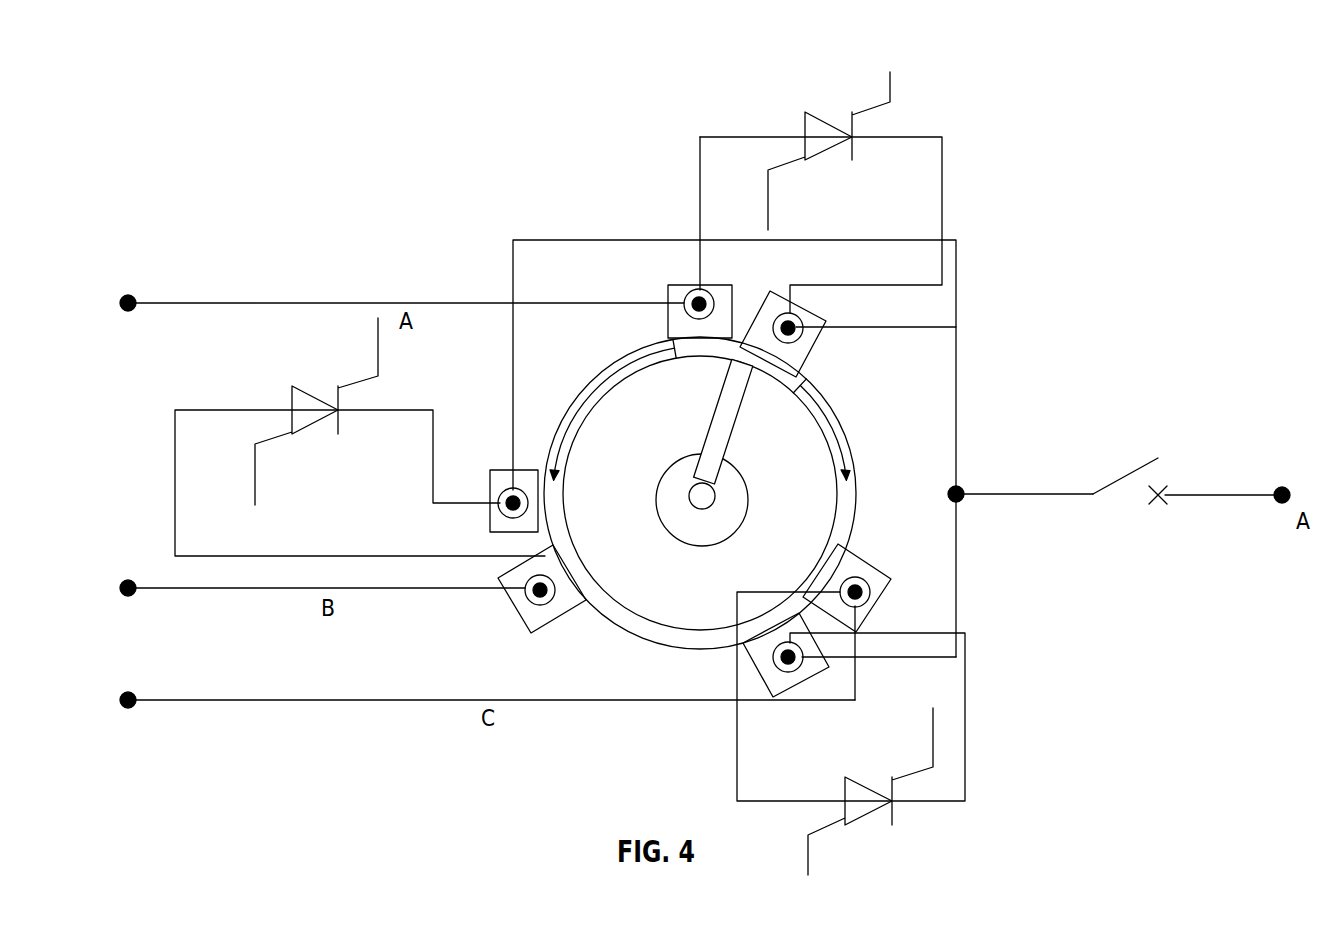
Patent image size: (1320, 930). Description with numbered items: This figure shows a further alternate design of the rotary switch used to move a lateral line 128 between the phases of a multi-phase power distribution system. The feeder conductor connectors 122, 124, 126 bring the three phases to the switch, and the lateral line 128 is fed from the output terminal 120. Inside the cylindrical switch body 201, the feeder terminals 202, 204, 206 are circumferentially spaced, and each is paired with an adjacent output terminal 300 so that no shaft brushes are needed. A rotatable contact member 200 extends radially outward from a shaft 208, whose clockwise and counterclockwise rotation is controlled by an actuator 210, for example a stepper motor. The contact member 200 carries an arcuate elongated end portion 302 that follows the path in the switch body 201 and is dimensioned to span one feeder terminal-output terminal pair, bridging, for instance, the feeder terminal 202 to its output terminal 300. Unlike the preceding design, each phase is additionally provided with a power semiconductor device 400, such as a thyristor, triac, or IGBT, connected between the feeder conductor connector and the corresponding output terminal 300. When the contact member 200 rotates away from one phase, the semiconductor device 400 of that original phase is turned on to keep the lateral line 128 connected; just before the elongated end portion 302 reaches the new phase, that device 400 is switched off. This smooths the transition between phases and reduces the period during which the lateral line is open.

The output terminal 120 is at (1003, 493).
The feeder conductor connector 122 is at (275, 303).
The feeder conductor connector 124 is at (248, 590).
The feeder conductor connector 126 is at (277, 699).
The lateral line 128 is at (1132, 470).
The rotatable contact member 200 is at (707, 440).
The switch body 201 is at (586, 384).
The feeder terminal 202 is at (697, 289).
The feeder terminal 204 is at (533, 618).
The feeder terminal 206 is at (866, 562).
The shaft 208 is at (689, 496).
The actuator 210 is at (745, 478).
The output terminal 300 is at (500, 478).
The elongated end portion 302 is at (692, 357).
The power semiconductor device 400 is at (310, 388).